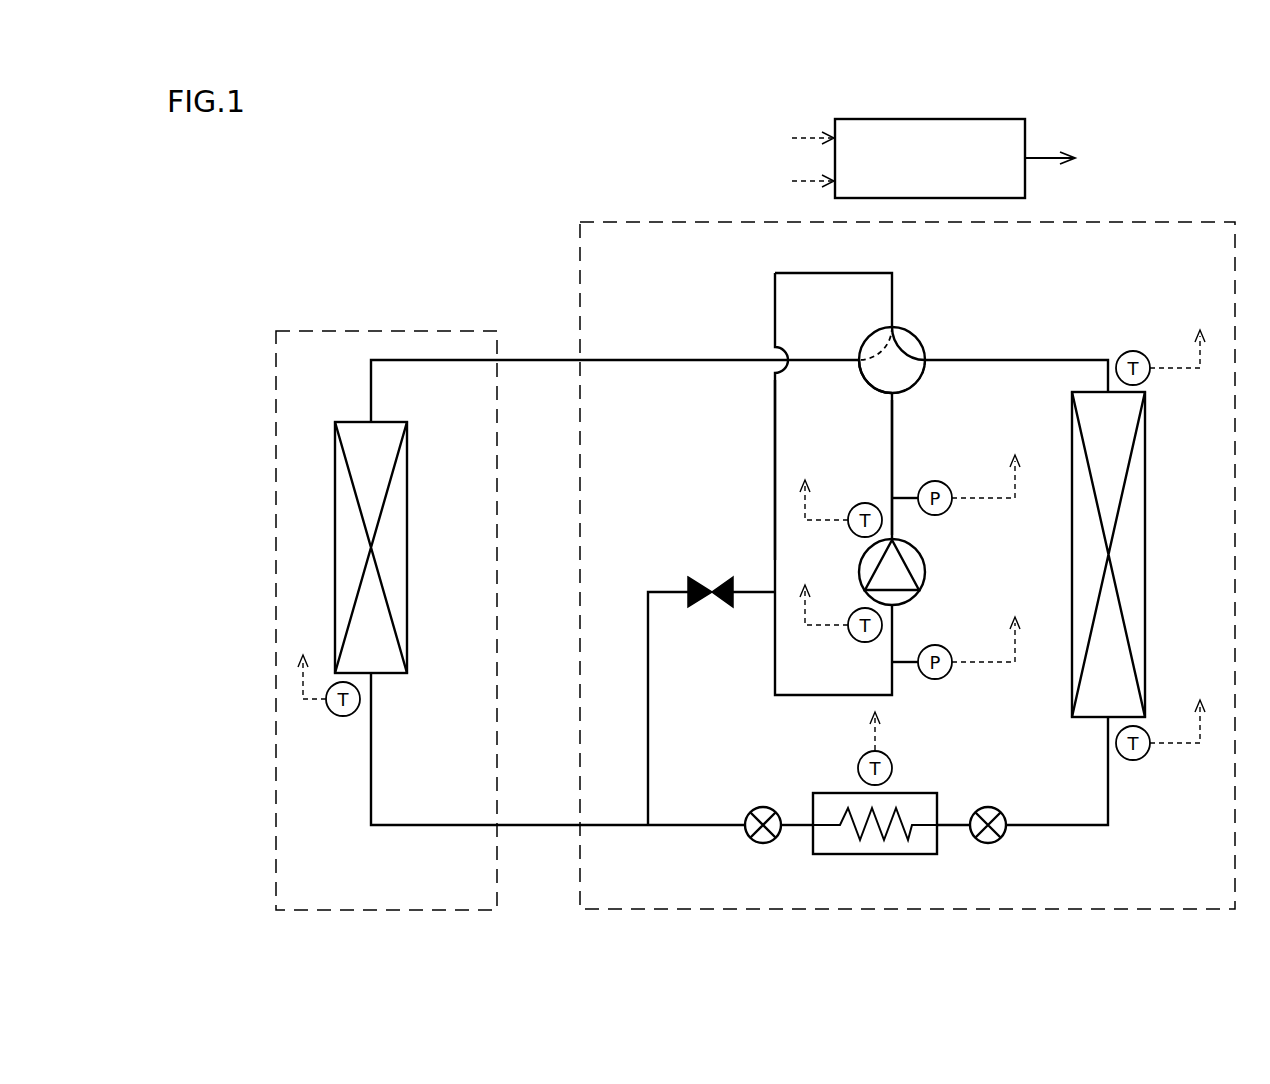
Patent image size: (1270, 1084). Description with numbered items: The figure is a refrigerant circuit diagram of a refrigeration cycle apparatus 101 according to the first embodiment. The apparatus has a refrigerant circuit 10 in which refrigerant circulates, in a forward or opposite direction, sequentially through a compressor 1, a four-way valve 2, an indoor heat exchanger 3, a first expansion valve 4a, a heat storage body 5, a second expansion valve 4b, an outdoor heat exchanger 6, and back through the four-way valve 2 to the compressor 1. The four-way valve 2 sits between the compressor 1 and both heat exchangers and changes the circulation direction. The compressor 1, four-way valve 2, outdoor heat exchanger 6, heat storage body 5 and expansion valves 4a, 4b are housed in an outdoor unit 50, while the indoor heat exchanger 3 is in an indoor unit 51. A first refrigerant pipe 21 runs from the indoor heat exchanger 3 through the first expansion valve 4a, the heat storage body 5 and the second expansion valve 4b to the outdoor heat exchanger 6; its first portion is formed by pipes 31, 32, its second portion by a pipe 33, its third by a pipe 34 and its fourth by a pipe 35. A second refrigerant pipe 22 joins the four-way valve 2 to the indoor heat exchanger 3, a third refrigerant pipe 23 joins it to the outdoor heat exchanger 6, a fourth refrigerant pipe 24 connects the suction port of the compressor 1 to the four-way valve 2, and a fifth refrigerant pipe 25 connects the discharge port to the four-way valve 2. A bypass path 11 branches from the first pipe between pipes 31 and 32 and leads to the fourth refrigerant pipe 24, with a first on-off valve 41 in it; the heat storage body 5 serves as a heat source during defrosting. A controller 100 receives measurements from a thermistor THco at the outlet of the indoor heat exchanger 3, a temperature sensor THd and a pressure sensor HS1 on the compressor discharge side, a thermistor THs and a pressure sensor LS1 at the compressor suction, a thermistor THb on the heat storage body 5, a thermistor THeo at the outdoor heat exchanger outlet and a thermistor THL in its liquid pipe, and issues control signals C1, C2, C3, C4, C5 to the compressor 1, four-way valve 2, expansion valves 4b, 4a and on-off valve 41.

The refrigeration cycle apparatus 101 is at (327, 193).
The controller 100 is at (972, 119).
The outdoor unit 50 is at (1178, 222).
The indoor unit 51 is at (448, 331).
The refrigerant circuit 10 is at (686, 341).
The compressor 1 is at (917, 598).
The four-way valve 2 is at (915, 388).
The indoor heat exchanger 3 is at (407, 500).
The first expansion valve 4a is at (765, 843).
The second expansion valve 4b is at (988, 843).
The heat storage body 5 is at (887, 855).
The outdoor heat exchanger 6 is at (1145, 500).
The bypass path 11 is at (666, 591).
The first refrigerant pipe 21 is at (686, 845).
The second refrigerant pipe 22 is at (622, 368).
The third refrigerant pipe 23 is at (1034, 358).
The fourth refrigerant pipe 24 is at (775, 428).
The fifth refrigerant pipe 25 is at (892, 428).
The pipe 31 is at (437, 823).
The pipe 32 is at (702, 823).
The pipe 33 is at (796, 823).
The pipe 34 is at (953, 823).
The pipe 35 is at (1060, 823).
The first on-off valve 41 is at (718, 604).
The thermistor THco is at (343, 717).
The temperature sensor THd is at (863, 503).
The thermistor THs is at (863, 642).
The thermistor THb is at (891, 758).
The thermistor THeo is at (1132, 351).
The thermistor THL is at (1142, 757).
The pressure sensor HS1 is at (931, 481).
The pressure sensor LS1 is at (943, 678).
The compressor control signal C1 is at (932, 572).
The four-way valve control signal C2 is at (925, 340).
The second expansion valve control signal C3 is at (988, 801).
The first expansion valve control signal C4 is at (763, 801).
The bypass valve control signal C5 is at (712, 582).